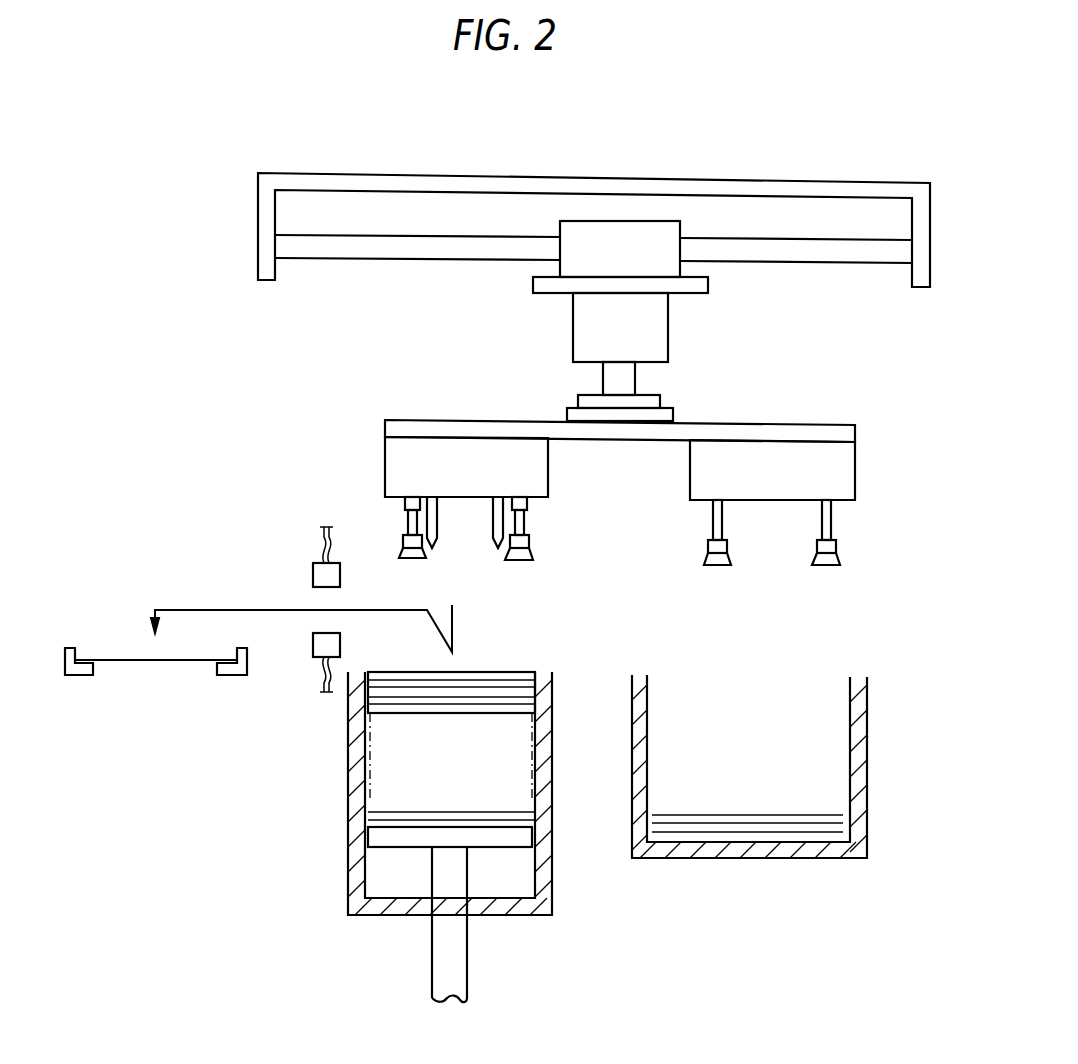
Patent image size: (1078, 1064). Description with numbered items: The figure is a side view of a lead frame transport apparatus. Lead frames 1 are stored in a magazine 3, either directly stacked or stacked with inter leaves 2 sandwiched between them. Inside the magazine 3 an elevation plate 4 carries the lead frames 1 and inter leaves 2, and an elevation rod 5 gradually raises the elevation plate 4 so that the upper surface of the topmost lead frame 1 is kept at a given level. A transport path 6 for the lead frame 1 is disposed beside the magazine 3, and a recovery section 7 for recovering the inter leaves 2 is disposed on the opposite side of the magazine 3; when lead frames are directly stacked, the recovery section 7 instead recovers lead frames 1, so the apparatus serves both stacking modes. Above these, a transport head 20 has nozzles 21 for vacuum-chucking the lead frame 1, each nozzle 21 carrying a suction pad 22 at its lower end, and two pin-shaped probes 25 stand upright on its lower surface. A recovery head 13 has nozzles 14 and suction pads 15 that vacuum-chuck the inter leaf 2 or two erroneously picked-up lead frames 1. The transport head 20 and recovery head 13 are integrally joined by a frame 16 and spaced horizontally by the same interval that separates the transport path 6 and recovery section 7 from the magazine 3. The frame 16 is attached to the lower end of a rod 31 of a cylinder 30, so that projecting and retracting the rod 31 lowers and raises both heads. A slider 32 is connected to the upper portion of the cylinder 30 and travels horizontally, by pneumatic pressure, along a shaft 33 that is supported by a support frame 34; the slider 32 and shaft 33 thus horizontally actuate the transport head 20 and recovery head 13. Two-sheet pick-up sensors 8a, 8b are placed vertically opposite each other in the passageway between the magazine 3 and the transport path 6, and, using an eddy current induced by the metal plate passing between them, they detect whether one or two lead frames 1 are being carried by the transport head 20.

The lead frame 1 is at (128, 658).
The inter leaf 2 is at (740, 815).
The magazine 3 is at (352, 872).
The elevation plate 4 is at (400, 840).
The elevation rod 5 is at (455, 958).
The transport path 6 is at (85, 677).
The recovery section 7 is at (867, 748).
The two-sheet pick-up sensor 8a is at (313, 648).
The two-sheet pick-up sensor 8b is at (312, 575).
The recovery head 13 is at (847, 468).
The nozzle 14 is at (722, 533).
The suction pad 15 is at (815, 566).
The frame 16 is at (523, 420).
The transport head 20 is at (393, 461).
The nozzle 21 is at (403, 543).
The suction pad 22 is at (425, 558).
The pin-shaped probe 25 is at (437, 519).
The cylinder 30 is at (655, 333).
The rod 31 is at (638, 380).
The slider 32 is at (642, 240).
The shaft 33 is at (855, 265).
The support frame 34 is at (875, 186).